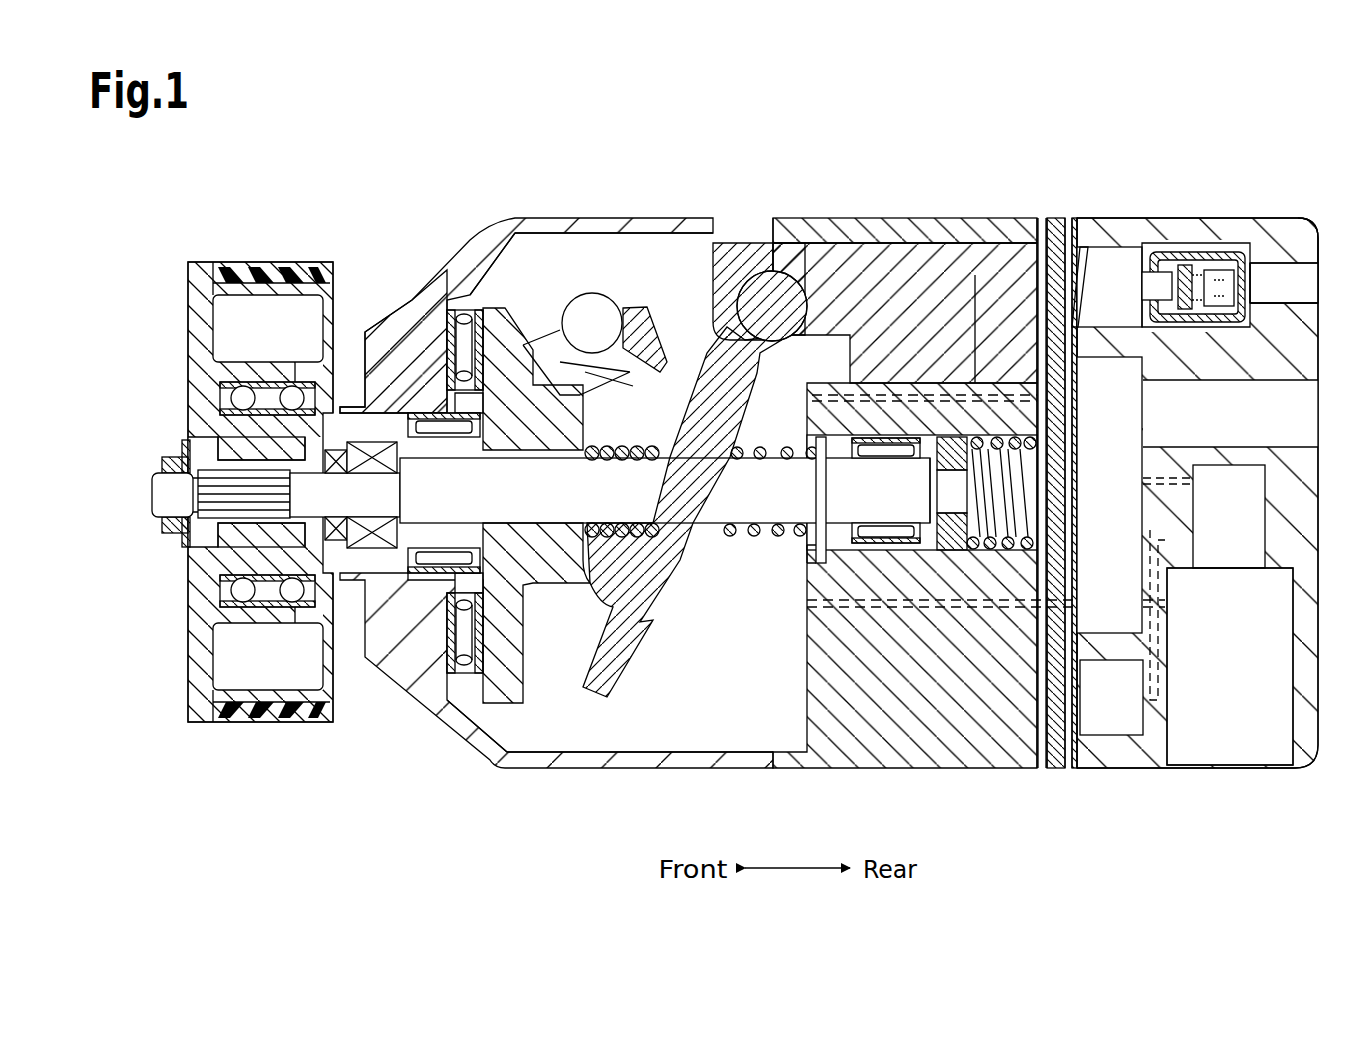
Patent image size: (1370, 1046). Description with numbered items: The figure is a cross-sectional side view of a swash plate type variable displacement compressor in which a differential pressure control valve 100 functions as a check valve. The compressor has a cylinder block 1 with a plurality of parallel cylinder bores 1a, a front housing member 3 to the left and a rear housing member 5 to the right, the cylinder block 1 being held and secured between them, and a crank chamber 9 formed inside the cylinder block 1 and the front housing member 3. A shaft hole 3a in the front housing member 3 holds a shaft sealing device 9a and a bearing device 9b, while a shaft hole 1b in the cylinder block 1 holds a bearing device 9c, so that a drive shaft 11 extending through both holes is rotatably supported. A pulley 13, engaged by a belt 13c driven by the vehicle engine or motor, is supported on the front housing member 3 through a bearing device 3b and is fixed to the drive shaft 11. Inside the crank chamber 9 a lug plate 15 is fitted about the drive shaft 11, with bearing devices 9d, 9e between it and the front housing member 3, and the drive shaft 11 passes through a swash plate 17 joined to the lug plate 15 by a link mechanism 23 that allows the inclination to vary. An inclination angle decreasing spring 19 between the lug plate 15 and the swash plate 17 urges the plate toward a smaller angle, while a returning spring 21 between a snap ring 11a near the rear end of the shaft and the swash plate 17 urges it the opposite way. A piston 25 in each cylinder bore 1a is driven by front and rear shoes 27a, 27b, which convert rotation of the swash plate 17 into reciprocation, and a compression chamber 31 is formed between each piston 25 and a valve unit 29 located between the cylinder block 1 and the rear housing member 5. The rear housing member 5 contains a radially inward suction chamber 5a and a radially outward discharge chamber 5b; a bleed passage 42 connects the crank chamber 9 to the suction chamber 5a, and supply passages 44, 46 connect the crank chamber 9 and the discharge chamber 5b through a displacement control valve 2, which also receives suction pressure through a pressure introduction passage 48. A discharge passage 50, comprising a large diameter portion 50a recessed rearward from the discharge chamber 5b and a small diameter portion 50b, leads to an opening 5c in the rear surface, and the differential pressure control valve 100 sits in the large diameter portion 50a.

The cylinder block 1 is at (918, 235).
The cylinder bore 1a is at (873, 262).
The shaft hole 1b is at (880, 461).
The displacement control valve 2 is at (1270, 648).
The front housing member 3 is at (418, 310).
The shaft hole 3a is at (383, 517).
The bearing device 3b is at (292, 390).
The rear housing member 5 is at (1226, 240).
The suction chamber 5a is at (1093, 516).
The discharge chamber 5b is at (1097, 306).
The opening 5c is at (1337, 262).
The crank chamber 9 is at (700, 708).
The shaft sealing device 9a is at (343, 517).
The bearing device 9b is at (385, 481).
The bearing device 9c is at (855, 522).
The bearing device 9d is at (461, 430).
The bearing device 9e is at (487, 640).
The drive shaft 11 is at (160, 500).
The snap ring 11a is at (807, 560).
The pulley 13 is at (210, 371).
The belt 13c is at (265, 722).
The lug plate 15 is at (523, 705).
The swash plate 17 is at (657, 583).
The inclination angle decreasing spring 19 is at (622, 460).
The returning spring 21 is at (772, 460).
The link mechanism 23 is at (556, 312).
The piston 25 is at (975, 275).
The front shoe 27a is at (727, 262).
The rear shoe 27b is at (822, 270).
The valve unit 29 is at (1050, 772).
The compression chamber 31 is at (1055, 235).
The bleed passage 42 is at (812, 398).
The supply passage 44 is at (833, 623).
The supply passage 46 is at (1165, 690).
The pressure introduction passage 48 is at (1172, 480).
The discharge passage 50 is at (1300, 266).
The large diameter portion 50a is at (1265, 300).
The small diameter portion 50b is at (1285, 316).
The differential pressure control valve 100 is at (1242, 265).